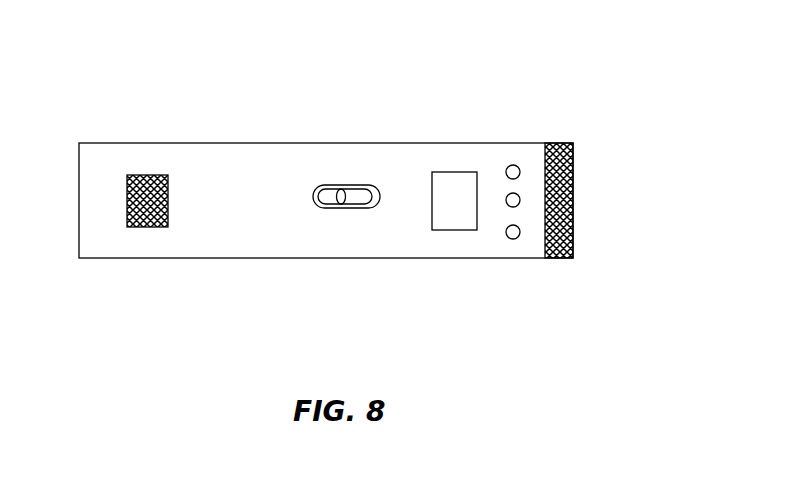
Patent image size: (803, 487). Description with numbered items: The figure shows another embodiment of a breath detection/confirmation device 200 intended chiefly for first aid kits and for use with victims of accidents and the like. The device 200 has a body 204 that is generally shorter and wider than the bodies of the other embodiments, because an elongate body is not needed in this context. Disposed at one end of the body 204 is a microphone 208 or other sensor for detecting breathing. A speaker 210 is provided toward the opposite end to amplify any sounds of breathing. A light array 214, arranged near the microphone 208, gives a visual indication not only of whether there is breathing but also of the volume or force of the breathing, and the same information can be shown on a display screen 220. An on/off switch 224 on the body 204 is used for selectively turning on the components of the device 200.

The breath detection/confirmation device 200 is at (275, 121).
The body 204 is at (255, 258).
The microphone 208 is at (574, 172).
The speaker 210 is at (153, 227).
The light array 214 is at (506, 194).
The display screen 220 is at (450, 218).
The on/off switch 224 is at (341, 208).